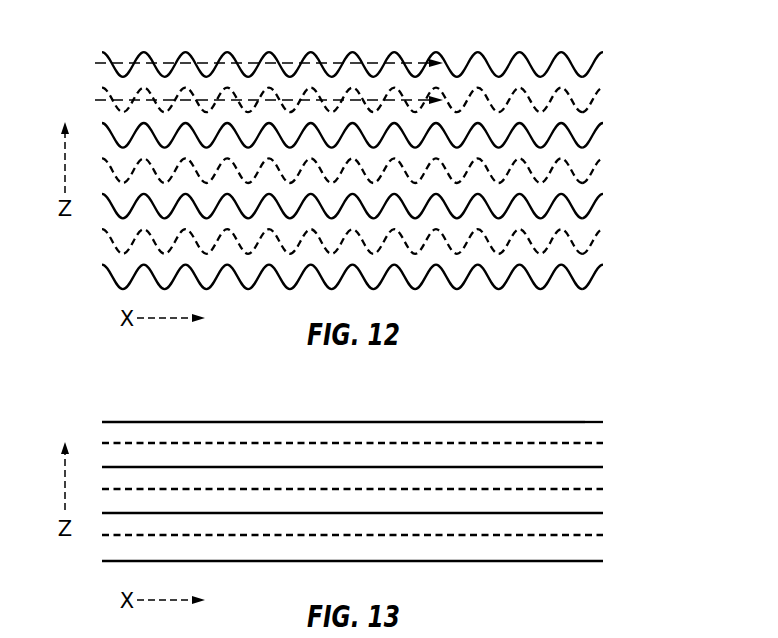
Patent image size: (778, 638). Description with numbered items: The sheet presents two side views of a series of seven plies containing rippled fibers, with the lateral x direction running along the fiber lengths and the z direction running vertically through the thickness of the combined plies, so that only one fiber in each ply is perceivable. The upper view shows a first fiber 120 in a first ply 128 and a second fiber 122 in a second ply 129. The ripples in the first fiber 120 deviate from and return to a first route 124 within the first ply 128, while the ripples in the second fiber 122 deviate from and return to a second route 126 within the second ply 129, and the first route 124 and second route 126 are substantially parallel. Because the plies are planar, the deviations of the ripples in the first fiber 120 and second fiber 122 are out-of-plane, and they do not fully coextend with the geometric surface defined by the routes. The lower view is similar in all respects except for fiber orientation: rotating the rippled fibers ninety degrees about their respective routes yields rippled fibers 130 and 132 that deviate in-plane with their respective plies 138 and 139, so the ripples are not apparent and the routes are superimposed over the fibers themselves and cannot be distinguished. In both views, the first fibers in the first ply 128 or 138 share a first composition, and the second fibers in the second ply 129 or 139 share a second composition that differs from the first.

In FIG. 12, the first fiber 120 is at (562, 53).
In FIG. 12, the second fiber 122 is at (578, 112).
In FIG. 12, the first route 124 is at (127, 63).
In FIG. 12, the second route 126 is at (127, 99).
In FIG. 12, the first ply 128 is at (612, 65).
In FIG. 12, the second ply 129 is at (612, 100).
In FIG. 13, the rippled first fiber 130 is at (447, 422).
In FIG. 13, the rippled second fiber 132 is at (508, 443).
In FIG. 13, the first ply 138 is at (616, 422).
In FIG. 13, the second ply 139 is at (616, 443).